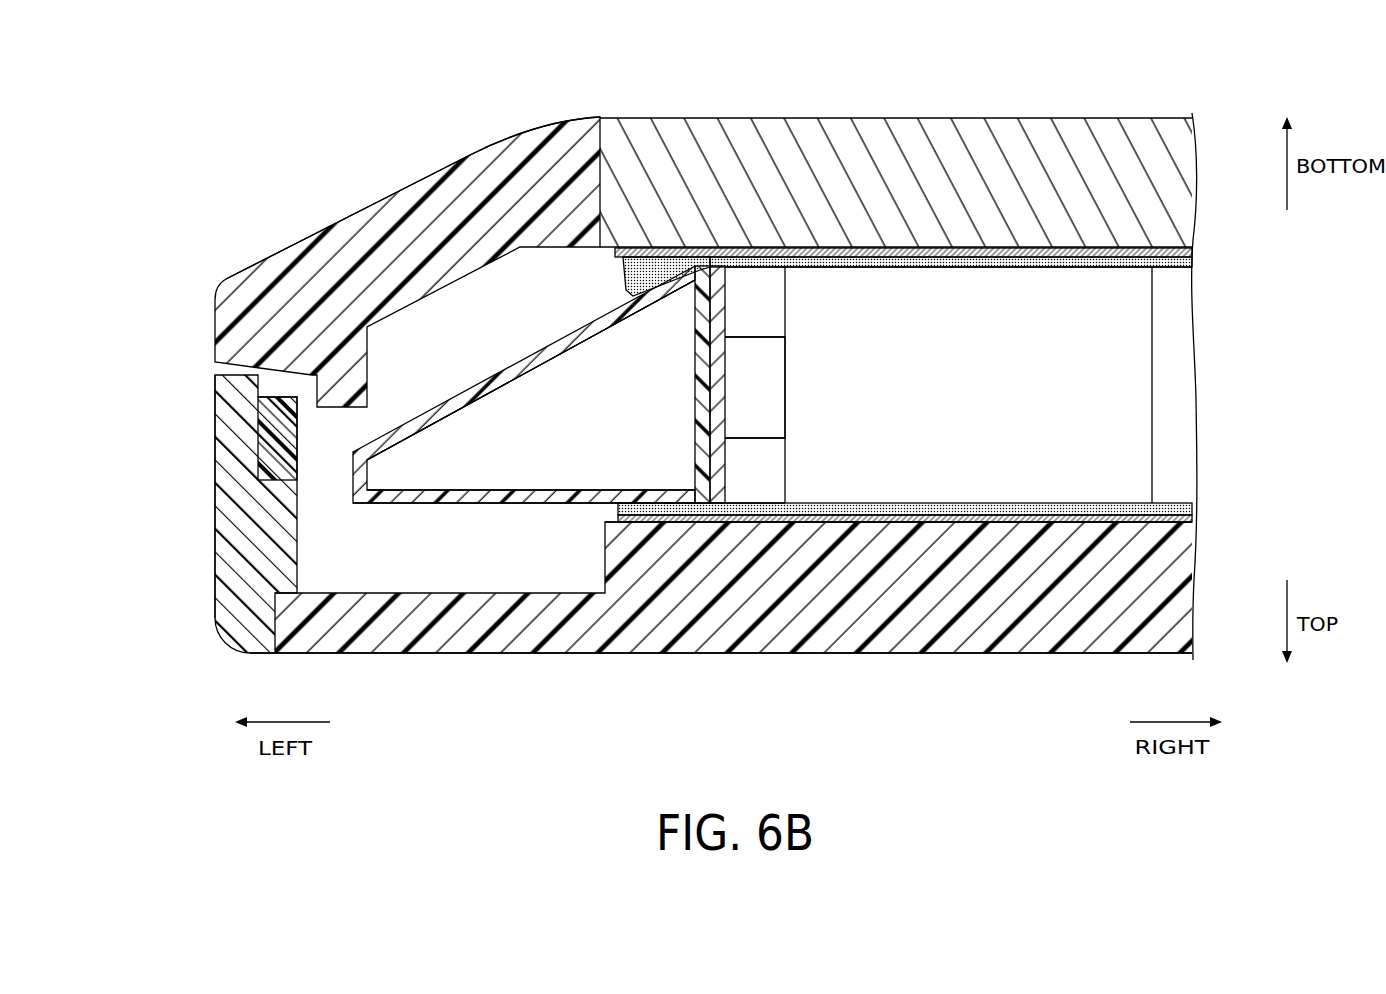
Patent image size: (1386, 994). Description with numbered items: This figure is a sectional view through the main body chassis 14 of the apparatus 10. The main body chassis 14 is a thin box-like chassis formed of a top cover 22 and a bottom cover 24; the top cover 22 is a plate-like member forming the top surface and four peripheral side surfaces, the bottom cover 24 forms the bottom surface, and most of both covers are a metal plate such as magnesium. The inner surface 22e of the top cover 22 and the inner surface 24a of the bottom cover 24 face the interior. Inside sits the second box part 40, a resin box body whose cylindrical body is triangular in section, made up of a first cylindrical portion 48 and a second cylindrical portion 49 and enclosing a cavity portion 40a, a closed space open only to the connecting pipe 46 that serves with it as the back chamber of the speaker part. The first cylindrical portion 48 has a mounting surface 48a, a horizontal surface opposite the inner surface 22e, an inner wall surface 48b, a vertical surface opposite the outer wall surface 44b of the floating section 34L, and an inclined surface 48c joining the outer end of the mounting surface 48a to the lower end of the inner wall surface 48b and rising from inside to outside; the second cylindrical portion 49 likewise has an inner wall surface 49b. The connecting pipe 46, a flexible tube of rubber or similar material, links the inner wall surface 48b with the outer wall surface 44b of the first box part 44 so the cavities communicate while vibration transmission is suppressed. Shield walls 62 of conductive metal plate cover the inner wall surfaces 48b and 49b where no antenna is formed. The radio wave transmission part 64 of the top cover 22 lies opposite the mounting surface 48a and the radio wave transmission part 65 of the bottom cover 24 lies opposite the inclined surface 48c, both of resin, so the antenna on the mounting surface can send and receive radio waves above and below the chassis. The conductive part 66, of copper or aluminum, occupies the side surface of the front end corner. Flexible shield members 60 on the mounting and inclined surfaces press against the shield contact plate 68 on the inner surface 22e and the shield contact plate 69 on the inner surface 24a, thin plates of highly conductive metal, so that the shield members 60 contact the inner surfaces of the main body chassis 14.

The electronic device 10 is at (182, 80).
The main body chassis 14 is at (132, 300).
The top cover 22 is at (214, 423).
The inner surface of the top cover 22e is at (958, 500).
The bottom cover 24 is at (214, 331).
The inner surface of the bottom cover 24a is at (1105, 277).
The floating section 34L is at (1105, 373).
The second box part 40 is at (714, 62).
The cavity portion 40a is at (550, 452).
The first box part 44 is at (1135, 458).
The outer wall surface 44b is at (768, 277).
The connecting pipe 46 is at (773, 387).
The first cylindrical portion 48 is at (567, 340).
The mounting surface 48a is at (470, 507).
The inner wall surface 48b is at (730, 473).
The inclined surface 48c is at (468, 393).
The second cylindrical portion 49 is at (740, 280).
The inner wall surface 49b is at (763, 483).
The shield members 60 is at (985, 262).
The shield wall 62 is at (725, 366).
The radio wave transmission part 64 is at (387, 653).
The radio wave transmission part 65 is at (418, 193).
The conductive part 66 is at (240, 565).
The shield contact plate 68 is at (1085, 505).
The shield contact plate 69 is at (1048, 247).